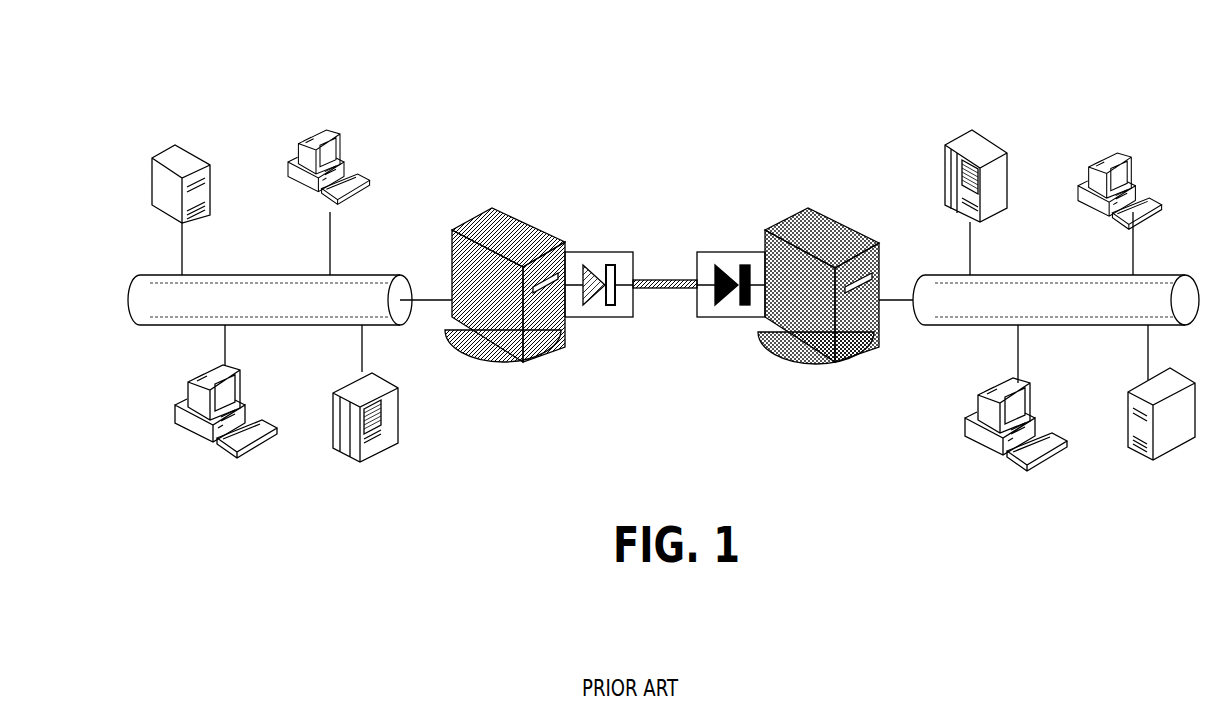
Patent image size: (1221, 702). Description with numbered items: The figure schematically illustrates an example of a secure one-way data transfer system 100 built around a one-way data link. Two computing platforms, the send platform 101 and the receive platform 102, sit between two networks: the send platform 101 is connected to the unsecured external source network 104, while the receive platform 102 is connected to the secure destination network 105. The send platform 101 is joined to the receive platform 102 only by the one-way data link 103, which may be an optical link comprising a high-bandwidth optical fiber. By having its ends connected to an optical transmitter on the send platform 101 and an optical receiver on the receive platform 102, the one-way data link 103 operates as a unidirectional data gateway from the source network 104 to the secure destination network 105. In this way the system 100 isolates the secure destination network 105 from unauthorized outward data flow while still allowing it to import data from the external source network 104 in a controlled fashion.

The one-way data transfer system 100 is at (681, 72).
The send platform 101 is at (508, 212).
The receive platform 102 is at (788, 208).
The one-way data link 103 is at (667, 292).
The source network 104 is at (256, 298).
The destination network 105 is at (1027, 297).